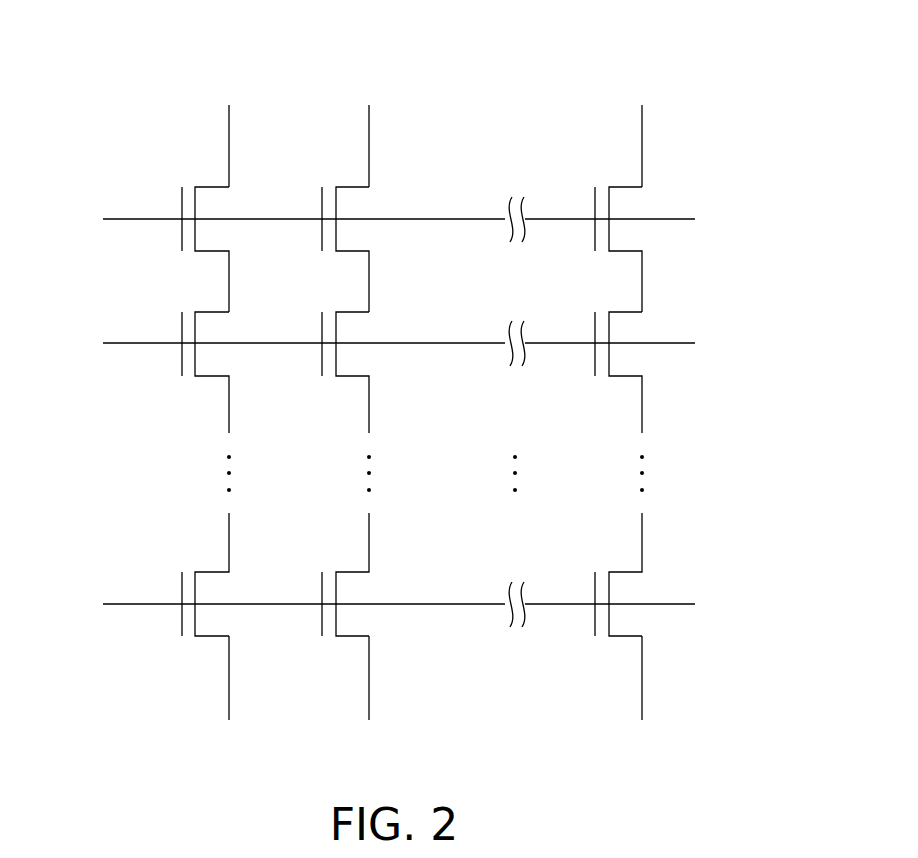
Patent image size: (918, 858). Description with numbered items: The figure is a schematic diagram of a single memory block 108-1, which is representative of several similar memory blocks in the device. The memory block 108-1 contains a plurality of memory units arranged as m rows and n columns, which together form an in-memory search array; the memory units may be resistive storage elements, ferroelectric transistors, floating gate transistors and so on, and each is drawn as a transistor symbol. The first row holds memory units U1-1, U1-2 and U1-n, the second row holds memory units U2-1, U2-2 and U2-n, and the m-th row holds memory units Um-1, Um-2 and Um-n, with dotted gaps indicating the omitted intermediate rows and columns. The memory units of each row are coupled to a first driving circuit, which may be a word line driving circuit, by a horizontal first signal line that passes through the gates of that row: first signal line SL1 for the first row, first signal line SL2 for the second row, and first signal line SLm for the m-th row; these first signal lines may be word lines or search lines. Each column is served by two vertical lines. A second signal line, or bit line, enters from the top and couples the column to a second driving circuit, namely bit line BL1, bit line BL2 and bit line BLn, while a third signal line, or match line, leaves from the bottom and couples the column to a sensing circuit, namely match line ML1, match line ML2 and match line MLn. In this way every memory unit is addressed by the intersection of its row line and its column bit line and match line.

The memory block 108-1 is at (691, 61).
The first signal line SL1 is at (374, 219).
The first signal line SL2 is at (374, 343).
The first signal line SLm is at (370, 604).
The second signal line BL1 is at (228, 131).
The second signal line BL2 is at (368, 131).
The second signal line BLn is at (641, 131).
The third signal line ML1 is at (228, 692).
The third signal line ML2 is at (368, 692).
The third signal line MLn is at (641, 692).
The memory unit U1-1 is at (219, 249).
The memory unit U1-2 is at (359, 249).
The memory unit U1-n is at (632, 249).
The memory unit U2-1 is at (219, 372).
The memory unit U2-2 is at (359, 372).
The memory unit U2-n is at (632, 372).
The memory unit Um-1 is at (222, 574).
The memory unit Um-2 is at (362, 574).
The memory unit Um-n is at (635, 574).